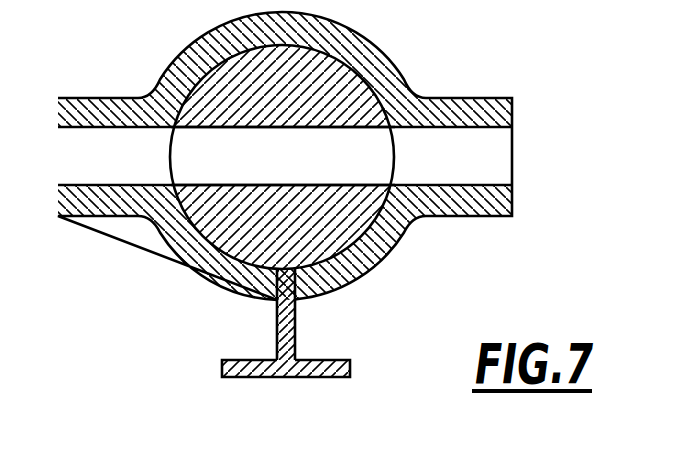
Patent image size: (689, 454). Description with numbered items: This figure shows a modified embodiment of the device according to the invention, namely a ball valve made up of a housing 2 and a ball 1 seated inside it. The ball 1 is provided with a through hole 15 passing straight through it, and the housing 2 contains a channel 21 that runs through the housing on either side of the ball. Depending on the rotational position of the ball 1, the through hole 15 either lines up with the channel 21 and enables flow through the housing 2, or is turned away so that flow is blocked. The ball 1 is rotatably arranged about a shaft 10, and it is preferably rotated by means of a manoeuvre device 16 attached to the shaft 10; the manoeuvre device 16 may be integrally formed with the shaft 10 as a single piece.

The ball 1 is at (400, 162).
The housing 2 is at (377, 32).
The shaft 10 is at (297, 327).
The through hole 15 is at (312, 170).
The manoeuvre device 16 is at (322, 380).
The channel 21 is at (478, 148).